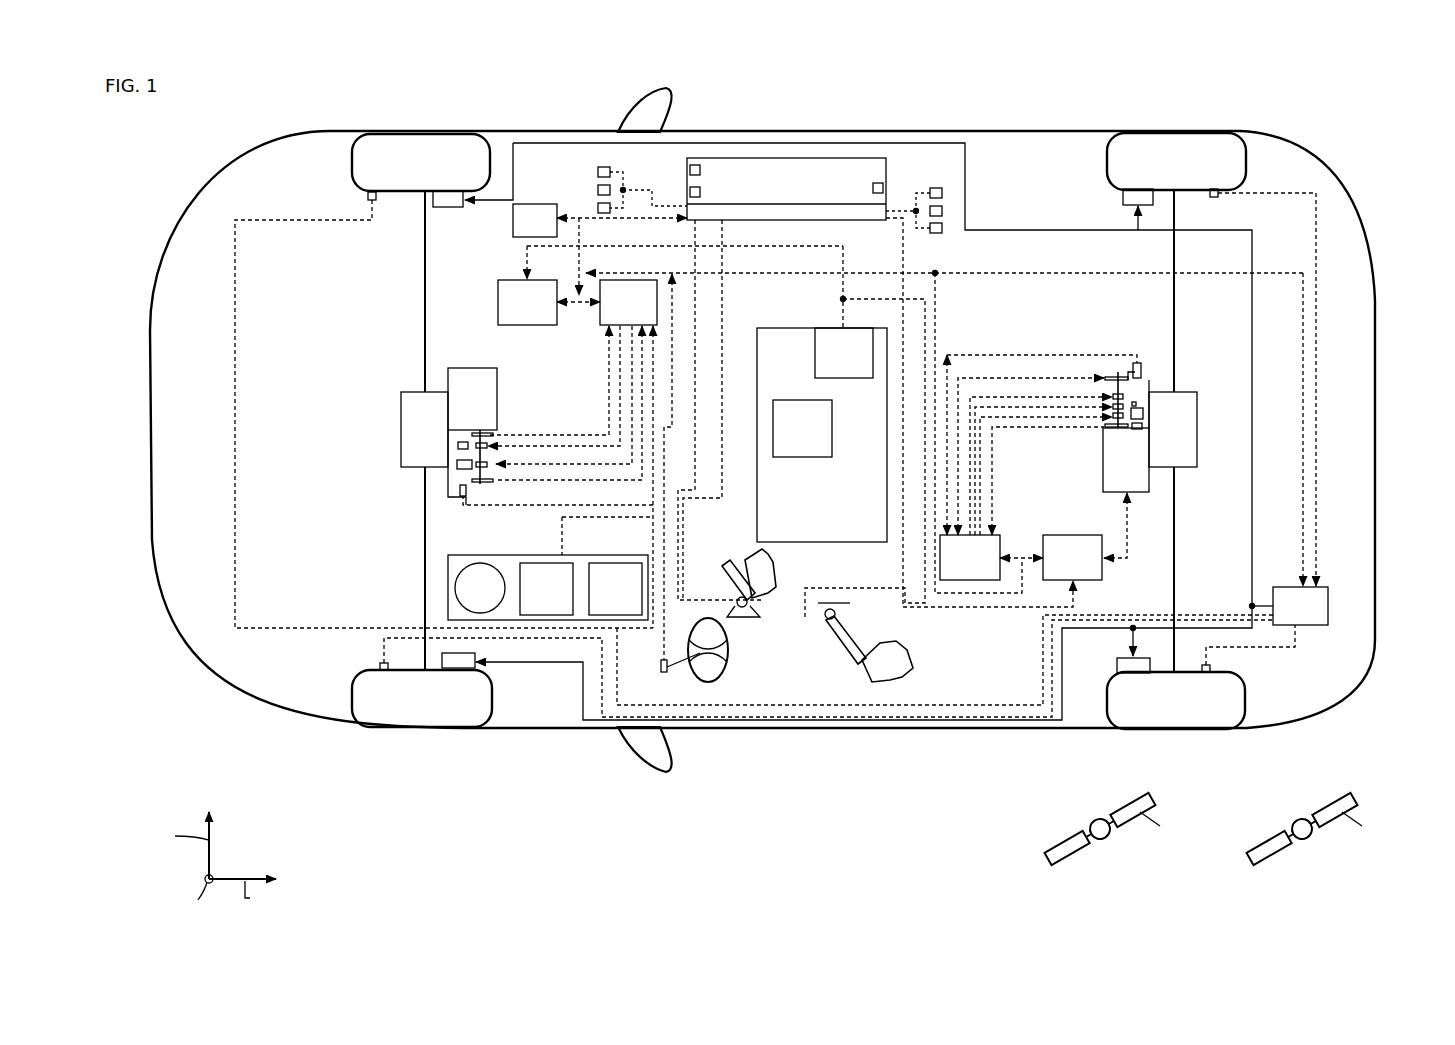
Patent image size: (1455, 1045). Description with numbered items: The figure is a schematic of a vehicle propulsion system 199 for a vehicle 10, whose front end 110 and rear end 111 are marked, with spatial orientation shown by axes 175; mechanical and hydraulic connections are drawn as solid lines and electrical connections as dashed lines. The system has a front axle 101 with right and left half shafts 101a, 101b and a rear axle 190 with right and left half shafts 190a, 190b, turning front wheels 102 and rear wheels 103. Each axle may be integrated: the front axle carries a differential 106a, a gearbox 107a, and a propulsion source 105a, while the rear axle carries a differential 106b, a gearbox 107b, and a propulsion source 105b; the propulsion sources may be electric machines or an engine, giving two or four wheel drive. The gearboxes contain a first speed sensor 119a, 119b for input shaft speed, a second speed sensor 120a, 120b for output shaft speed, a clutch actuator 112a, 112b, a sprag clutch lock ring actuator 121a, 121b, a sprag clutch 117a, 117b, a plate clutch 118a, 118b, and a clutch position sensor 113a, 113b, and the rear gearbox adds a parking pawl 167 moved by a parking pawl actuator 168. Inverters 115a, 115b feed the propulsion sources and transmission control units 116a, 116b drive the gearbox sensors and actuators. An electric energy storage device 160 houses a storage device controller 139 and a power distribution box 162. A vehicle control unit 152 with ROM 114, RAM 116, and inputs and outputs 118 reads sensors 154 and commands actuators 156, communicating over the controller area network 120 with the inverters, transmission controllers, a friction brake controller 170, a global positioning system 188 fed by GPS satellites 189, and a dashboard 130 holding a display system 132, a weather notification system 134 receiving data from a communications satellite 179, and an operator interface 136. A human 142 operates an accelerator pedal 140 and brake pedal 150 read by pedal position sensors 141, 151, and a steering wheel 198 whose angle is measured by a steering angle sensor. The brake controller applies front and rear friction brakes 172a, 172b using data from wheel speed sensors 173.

The vehicle 10 is at (993, 130).
The front axle 101 is at (388, 478).
The first or right half shaft 101a is at (425, 253).
The second or left half shaft 101b is at (425, 592).
The front wheels 102 is at (430, 137).
The rear wheels 103 is at (1175, 136).
The propulsion source 105a is at (478, 368).
The propulsion source 105b is at (1103, 478).
The differential 106a is at (400, 398).
The differential 106b is at (1193, 394).
The gearbox 107a is at (458, 500).
The gearbox 107b is at (1131, 366).
The front end 110 is at (122, 225).
The rear end 111 is at (1420, 166).
The clutch actuator 112a is at (492, 442).
The clutch actuator 112b is at (1110, 408).
The plate clutch position sensor 113a is at (470, 498).
The clutch position sensor 113b is at (1137, 362).
The read-only memory 114 is at (690, 170).
The electric power inverter 115a is at (527, 302).
The electric power inverter 115b is at (1072, 557).
The random access memory 116 is at (690, 192).
The transmission control unit 116a is at (628, 302).
The transmission control unit 116b is at (970, 557).
The sprag clutch 117a is at (457, 446).
The sprag clutch 117b is at (1147, 432).
The inputs and outputs 118 is at (830, 222).
The plate clutch 118a is at (456, 464).
The plate clutch 118b is at (1145, 425).
The first speed sensor 119a is at (485, 432).
The first speed sensor 119b is at (1108, 435).
The controller area network 120 is at (579, 250).
The second speed sensor 120a is at (494, 483).
The second speed sensor 120b is at (1108, 376).
The sprag clutch lock ring actuator 121a is at (499, 461).
The sprag clutch lock ring actuator 121b is at (1103, 395).
The dashboard 130 is at (465, 555).
The display system 132 is at (480, 588).
The interactive weather data display and notification system 134 is at (546, 589).
The operator interface 136 is at (615, 589).
The electric energy storage device controller 139 is at (802, 428).
The accelerator pedal 140 is at (716, 582).
The accelerator pedal position sensor 141 is at (749, 604).
The human 142 is at (750, 560).
The brake pedal 150 is at (860, 665).
The brake pedal position sensor 151 is at (822, 628).
The vehicle control unit 152 is at (786, 190).
The sensors 154 is at (596, 191).
The actuators 156 is at (945, 230).
The electric energy storage device 160 is at (883, 190).
The electrical power distribution box 162 is at (844, 353).
The parking pawl 167 is at (1145, 418).
The parking pawl actuator 168 is at (1140, 384).
The friction brake controller 170 is at (1300, 606).
The front friction brakes 172a is at (448, 207).
The rear friction brakes 172b is at (1122, 199).
The wheel position or speed sensors 173 is at (366, 197).
The axes 175 is at (237, 828).
The communications satellite 179 is at (1120, 828).
The global positioning system 188 is at (600, 220).
The GPS satellites 189 is at (1322, 828).
The rear axle 190 is at (1192, 492).
The first or right half shaft 190a is at (1178, 325).
The second or left half shaft 190b is at (1173, 585).
The steering wheel 198 is at (722, 656).
The vehicle propulsion system 199 is at (925, 100).